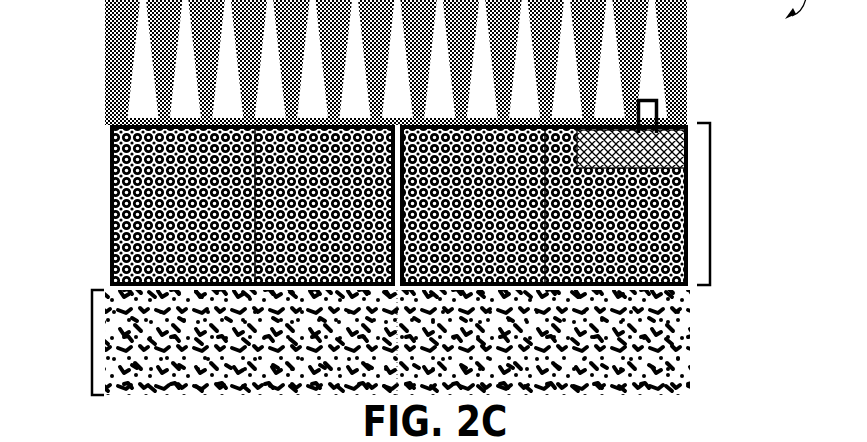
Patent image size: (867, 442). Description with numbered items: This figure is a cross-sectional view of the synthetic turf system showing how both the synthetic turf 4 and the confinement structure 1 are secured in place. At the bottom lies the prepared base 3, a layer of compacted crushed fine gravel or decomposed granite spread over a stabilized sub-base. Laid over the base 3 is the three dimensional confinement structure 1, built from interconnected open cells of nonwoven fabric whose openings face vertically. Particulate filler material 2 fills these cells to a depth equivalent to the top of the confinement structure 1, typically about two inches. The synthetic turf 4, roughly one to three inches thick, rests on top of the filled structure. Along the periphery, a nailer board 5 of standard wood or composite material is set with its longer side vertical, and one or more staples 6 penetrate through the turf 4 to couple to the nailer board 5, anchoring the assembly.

The confinement structure 1 is at (713, 195).
The filler material 2 is at (110, 172).
The base 3 is at (88, 338).
The turf 4 is at (680, 41).
The nailer board 5 is at (663, 133).
The staple 6 is at (658, 99).